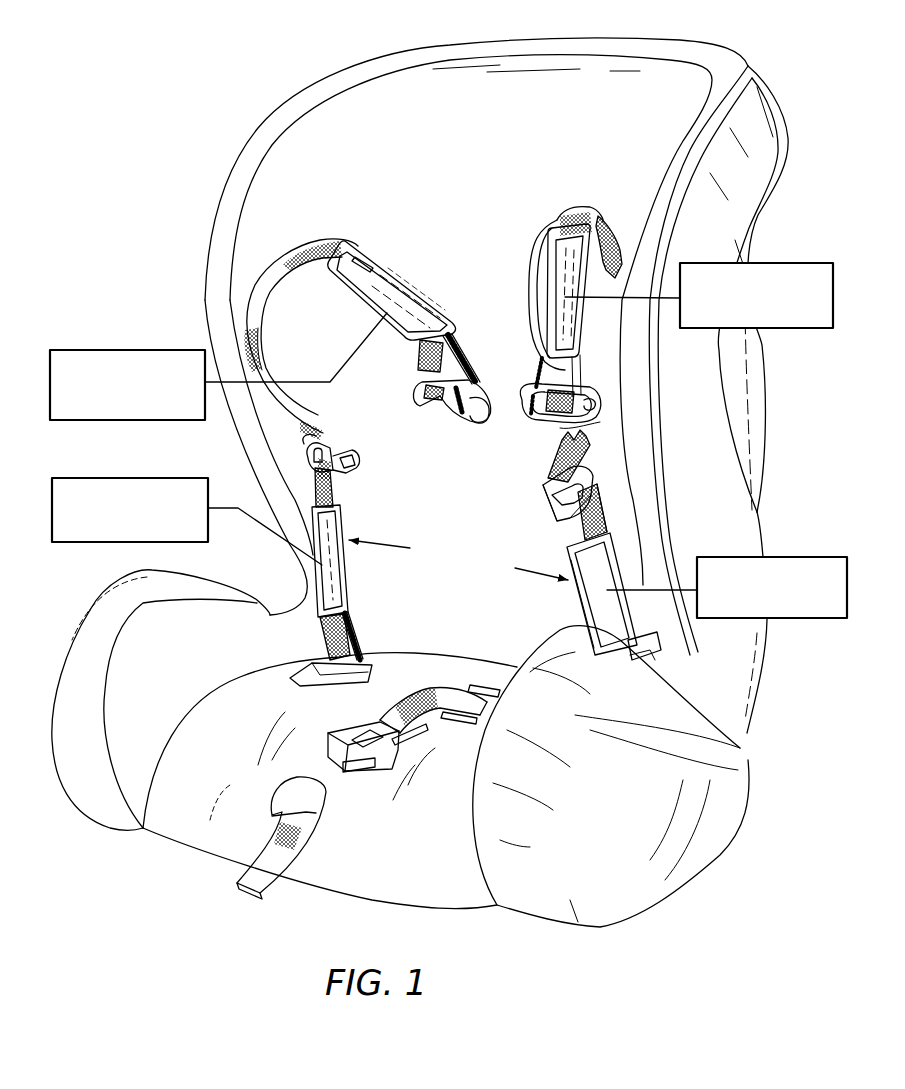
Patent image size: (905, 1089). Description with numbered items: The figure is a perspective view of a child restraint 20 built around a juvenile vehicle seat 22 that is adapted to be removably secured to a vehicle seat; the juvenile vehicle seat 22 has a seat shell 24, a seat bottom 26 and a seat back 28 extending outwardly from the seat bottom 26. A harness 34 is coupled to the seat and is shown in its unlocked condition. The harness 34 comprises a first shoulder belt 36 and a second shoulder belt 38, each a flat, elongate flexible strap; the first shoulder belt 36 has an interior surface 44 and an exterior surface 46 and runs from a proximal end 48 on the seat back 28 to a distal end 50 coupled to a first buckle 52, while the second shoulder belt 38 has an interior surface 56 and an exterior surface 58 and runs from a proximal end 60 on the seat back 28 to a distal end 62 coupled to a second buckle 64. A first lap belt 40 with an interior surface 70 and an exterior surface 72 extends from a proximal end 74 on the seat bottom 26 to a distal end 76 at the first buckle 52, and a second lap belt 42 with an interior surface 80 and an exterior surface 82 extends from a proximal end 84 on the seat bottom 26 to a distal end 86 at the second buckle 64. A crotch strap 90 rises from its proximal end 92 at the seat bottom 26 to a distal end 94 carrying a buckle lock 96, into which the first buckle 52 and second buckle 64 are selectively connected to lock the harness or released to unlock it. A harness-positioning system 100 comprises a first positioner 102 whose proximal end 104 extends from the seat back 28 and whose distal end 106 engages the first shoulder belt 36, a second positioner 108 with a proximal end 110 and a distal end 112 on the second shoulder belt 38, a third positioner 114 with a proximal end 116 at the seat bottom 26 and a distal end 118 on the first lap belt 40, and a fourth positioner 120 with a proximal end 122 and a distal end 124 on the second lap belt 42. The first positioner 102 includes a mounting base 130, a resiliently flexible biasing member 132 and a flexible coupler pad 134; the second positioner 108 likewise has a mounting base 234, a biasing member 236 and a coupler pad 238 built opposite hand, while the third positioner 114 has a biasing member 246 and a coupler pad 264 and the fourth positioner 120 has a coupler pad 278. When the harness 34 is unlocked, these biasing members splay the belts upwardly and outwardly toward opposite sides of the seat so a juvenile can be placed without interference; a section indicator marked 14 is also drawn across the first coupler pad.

The child restraint 20 is at (232, 112).
The juvenile vehicle seat 22 is at (300, 97).
The seat shell 24 is at (755, 413).
The seat bottom 26 is at (230, 835).
The seat back 28 is at (538, 97).
The harness 34 is at (281, 250).
The first shoulder belt 36 is at (255, 290).
The second shoulder belt 38 is at (610, 215).
The first lap belt 40 is at (300, 463).
The second lap belt 42 is at (607, 500).
The interior surface 44 is at (423, 366).
The exterior surface 46 is at (245, 337).
The proximal end 48 is at (455, 408).
The distal end 50 is at (340, 455).
The first buckle 52 is at (362, 471).
The interior surface 56 is at (578, 228).
The exterior surface 58 is at (615, 238).
The proximal end 60 is at (562, 397).
The distal end 62 is at (550, 473).
The second buckle 64 is at (573, 495).
The interior surface 70 is at (323, 647).
The exterior surface 72 is at (318, 488).
The proximal end 74 is at (340, 655).
The distal end 76 is at (302, 440).
The interior surface 80 is at (575, 526).
The exterior surface 82 is at (603, 515).
The proximal end 84 is at (633, 657).
The distal end 86 is at (568, 478).
The crotch strap 90 is at (418, 696).
The buckle latch 92 is at (453, 690).
The distal end 94 is at (410, 730).
The buckle lock 96 is at (380, 768).
The harness-positioning system 100 is at (348, 228).
The first positioner 102 is at (96, 348).
The proximal end 104 is at (483, 430).
The distal end 106 is at (370, 240).
The second positioner 108 is at (785, 260).
The proximal end 110 is at (535, 425).
The distal end 112 is at (532, 248).
The third positioner 114 is at (94, 476).
The proximal end 116 is at (347, 654).
The distal end 118 is at (338, 503).
The fourth positioner 120 is at (797, 558).
The proximal end 122 is at (635, 643).
The distal end 124 is at (572, 580).
The mounting base 130 is at (428, 410).
The biasing member 132 is at (447, 387).
The coupler pad 134 is at (406, 279).
The mounting base 234 is at (600, 422).
The biasing member 236 is at (553, 363).
The coupler pad 238 is at (530, 290).
The biasing member 246 is at (342, 637).
The coupler pad 264 is at (335, 576).
The coupler pad 278 is at (590, 612).
The section line 14 is at (387, 313).